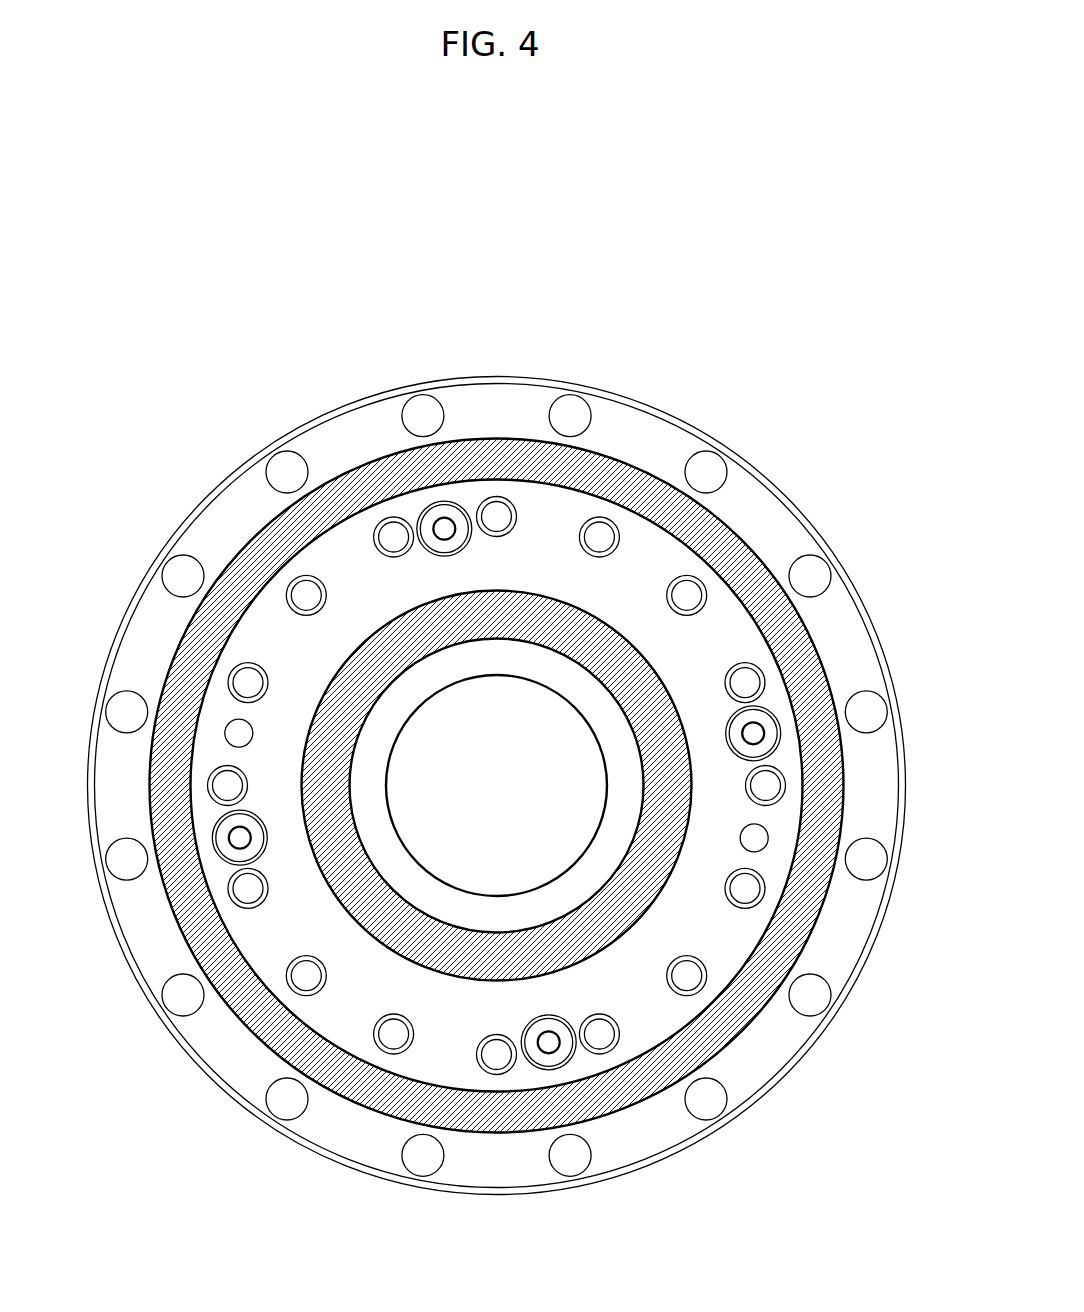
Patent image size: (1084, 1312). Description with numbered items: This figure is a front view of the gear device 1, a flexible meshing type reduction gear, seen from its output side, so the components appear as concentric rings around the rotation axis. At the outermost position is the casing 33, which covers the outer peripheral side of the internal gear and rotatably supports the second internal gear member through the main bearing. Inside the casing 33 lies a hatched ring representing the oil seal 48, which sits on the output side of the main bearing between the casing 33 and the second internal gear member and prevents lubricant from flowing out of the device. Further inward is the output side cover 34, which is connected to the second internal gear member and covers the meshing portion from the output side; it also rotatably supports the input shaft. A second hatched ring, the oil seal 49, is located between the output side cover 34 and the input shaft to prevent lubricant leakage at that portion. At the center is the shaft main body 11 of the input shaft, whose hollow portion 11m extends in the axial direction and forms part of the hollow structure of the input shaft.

The gear device 1 is at (598, 266).
The shaft main body 11 is at (395, 707).
The hollow portion 11m is at (421, 846).
The casing 33 is at (758, 517).
The output side cover 34 is at (753, 642).
The oil seal 48 is at (608, 478).
The oil seal 49 is at (413, 643).